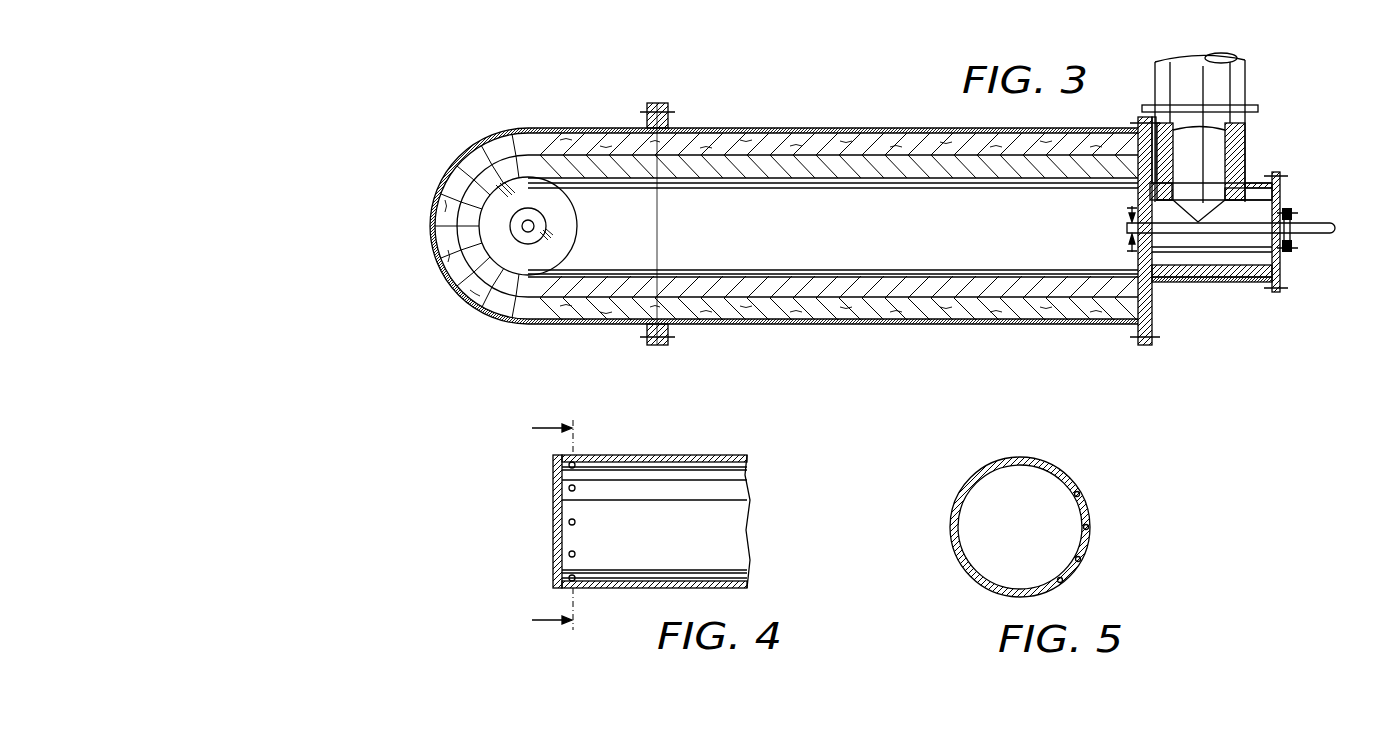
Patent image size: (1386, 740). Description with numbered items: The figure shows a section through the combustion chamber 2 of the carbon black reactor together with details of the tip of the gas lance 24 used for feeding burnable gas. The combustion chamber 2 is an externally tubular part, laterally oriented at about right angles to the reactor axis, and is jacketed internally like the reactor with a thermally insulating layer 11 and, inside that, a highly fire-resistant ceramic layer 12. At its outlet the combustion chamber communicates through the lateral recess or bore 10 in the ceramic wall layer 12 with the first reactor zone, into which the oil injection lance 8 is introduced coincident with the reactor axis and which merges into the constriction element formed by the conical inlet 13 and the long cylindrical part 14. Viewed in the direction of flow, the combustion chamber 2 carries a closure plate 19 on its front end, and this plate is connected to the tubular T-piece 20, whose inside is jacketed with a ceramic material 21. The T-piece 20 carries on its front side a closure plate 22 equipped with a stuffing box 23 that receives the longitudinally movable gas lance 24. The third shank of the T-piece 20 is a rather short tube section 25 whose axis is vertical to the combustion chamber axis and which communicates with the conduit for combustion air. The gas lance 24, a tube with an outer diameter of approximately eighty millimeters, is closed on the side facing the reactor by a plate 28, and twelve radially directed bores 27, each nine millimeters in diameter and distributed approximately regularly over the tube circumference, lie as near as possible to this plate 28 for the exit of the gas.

In FIG. 3, the combustion chamber 2 is at (866, 129).
In FIG. 3, the oil injection lance 8 is at (538, 227).
In FIG. 3, the lateral recess or bore 10 is at (648, 243).
In FIG. 3, the insulating layer 11 is at (978, 325).
In FIG. 3, the ceramic layer 12 is at (981, 285).
In FIG. 3, the conical inlet 13 is at (568, 234).
In FIG. 3, the cylindrical part 14 is at (548, 234).
In FIG. 3, the closure plate 19 is at (1152, 337).
In FIG. 3, the tubular T-piece 20 is at (1223, 284).
In FIG. 3, the ceramic material 21 is at (1147, 268).
In FIG. 3, the closure plate 22 is at (1281, 212).
In FIG. 3, the stuffing box 23 is at (1290, 217).
In FIG. 3, the gas lance 24 is at (1320, 230).
In FIG. 4, the gas lance 24 is at (653, 455).
In FIG. 5, the gas lance 24 is at (1038, 455).
In FIG. 3, the tube section 25 is at (1243, 128).
In FIG. 4, the radially directed bores 27 is at (576, 578).
In FIG. 5, the radially directed bores 27 is at (1063, 582).
In FIG. 4, the plate 28 is at (552, 505).